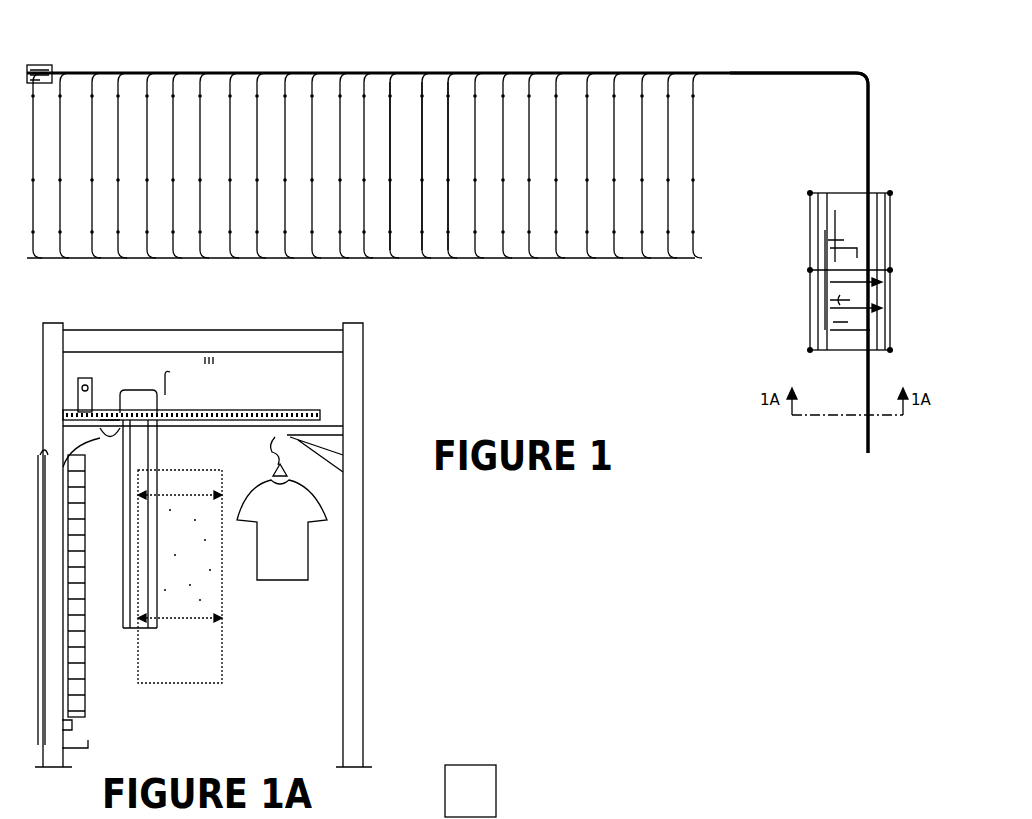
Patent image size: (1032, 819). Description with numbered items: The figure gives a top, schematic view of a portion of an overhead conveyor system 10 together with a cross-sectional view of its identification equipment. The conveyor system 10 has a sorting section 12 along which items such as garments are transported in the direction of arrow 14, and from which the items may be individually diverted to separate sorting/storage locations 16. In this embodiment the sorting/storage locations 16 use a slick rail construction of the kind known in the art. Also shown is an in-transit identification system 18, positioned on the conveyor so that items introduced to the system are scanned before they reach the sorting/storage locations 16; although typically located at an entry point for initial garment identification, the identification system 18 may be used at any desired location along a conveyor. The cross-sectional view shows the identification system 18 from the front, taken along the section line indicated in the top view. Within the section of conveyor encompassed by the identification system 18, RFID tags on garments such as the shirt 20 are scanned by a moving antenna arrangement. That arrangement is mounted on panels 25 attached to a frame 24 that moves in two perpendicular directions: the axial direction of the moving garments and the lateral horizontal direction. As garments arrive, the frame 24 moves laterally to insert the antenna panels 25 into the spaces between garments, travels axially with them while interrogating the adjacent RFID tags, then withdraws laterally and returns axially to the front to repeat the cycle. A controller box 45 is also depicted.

In FIG. 1, the overhead conveyor system 10 is at (597, 290).
In FIG. 1, the sorting section 12 is at (720, 56).
In FIG. 1, the arrow 14 is at (856, 50).
In FIG. 1, the sorting/storage locations 16 is at (390, 248).
In FIG. 1, the in-transit identification system 18 is at (808, 312).
In FIG. 1A, the shirt 20 is at (277, 570).
In FIG. 1A, the frame 24 is at (125, 558).
In FIG. 1A, the panels 25 is at (180, 576).
In FIG. 1A, the controller 45 is at (470, 791).